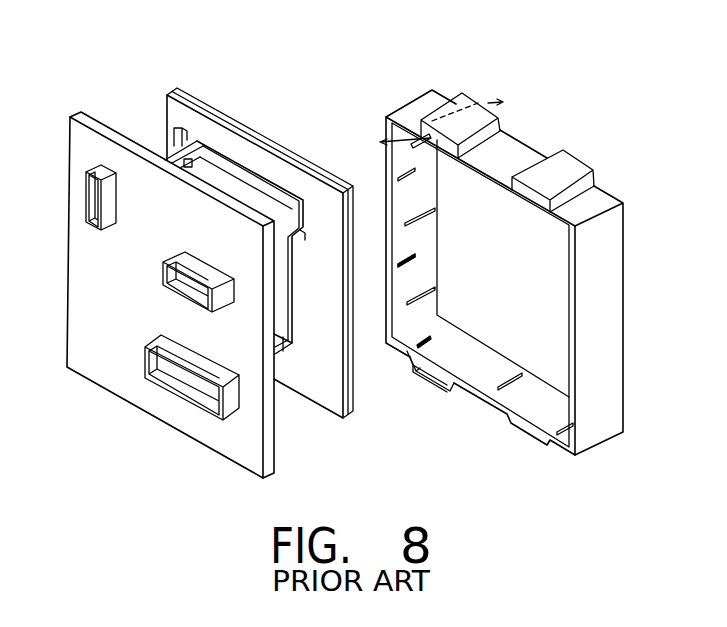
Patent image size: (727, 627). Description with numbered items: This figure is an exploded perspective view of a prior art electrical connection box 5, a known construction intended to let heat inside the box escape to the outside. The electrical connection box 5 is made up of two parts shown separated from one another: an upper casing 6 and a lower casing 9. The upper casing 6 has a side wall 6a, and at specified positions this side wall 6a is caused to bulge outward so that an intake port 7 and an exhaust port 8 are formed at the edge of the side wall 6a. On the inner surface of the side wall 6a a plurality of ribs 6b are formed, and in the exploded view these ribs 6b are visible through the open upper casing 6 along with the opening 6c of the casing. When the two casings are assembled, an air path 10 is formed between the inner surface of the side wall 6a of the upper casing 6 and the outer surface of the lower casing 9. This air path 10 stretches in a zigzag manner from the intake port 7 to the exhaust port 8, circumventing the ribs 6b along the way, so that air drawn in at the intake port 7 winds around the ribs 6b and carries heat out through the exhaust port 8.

The electrical connection box 5 is at (128, 62).
The lower casing 9 is at (80, 151).
The upper casing 6 is at (444, 97).
The side wall 6a is at (602, 195).
The ribs 6b is at (436, 211).
The frame opening 6c is at (533, 320).
The intake port 7 is at (430, 368).
The exhaust port 8 is at (443, 150).
The air path 10 is at (400, 300).